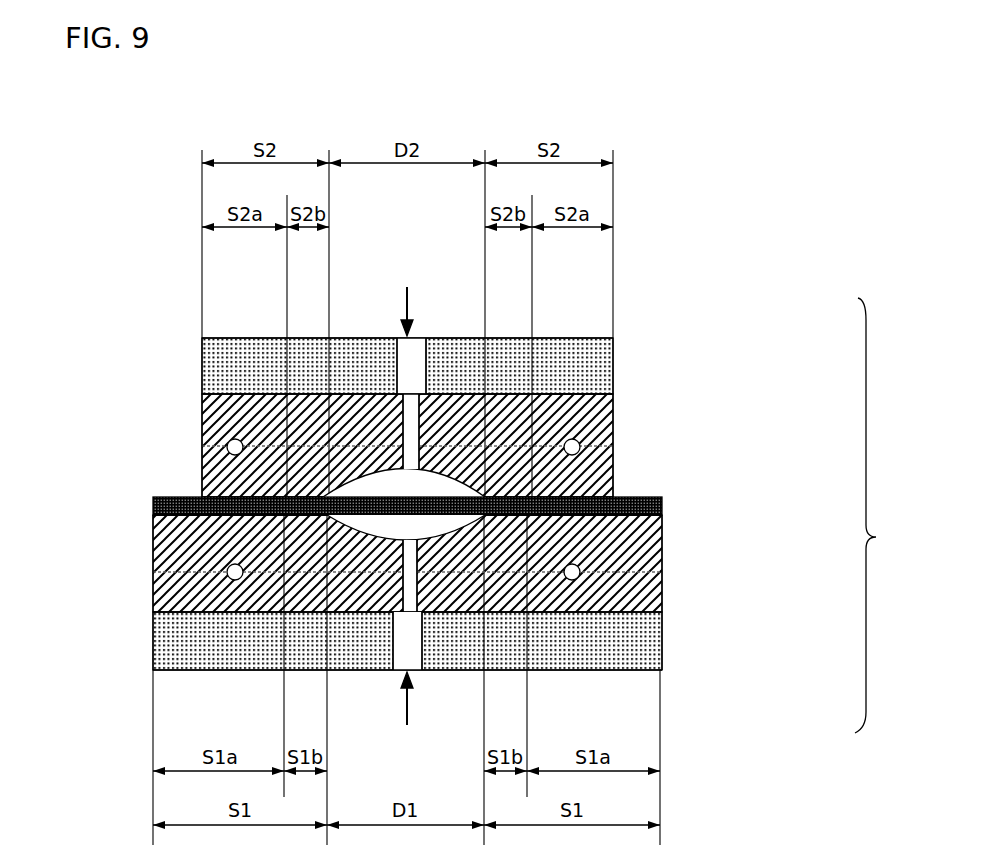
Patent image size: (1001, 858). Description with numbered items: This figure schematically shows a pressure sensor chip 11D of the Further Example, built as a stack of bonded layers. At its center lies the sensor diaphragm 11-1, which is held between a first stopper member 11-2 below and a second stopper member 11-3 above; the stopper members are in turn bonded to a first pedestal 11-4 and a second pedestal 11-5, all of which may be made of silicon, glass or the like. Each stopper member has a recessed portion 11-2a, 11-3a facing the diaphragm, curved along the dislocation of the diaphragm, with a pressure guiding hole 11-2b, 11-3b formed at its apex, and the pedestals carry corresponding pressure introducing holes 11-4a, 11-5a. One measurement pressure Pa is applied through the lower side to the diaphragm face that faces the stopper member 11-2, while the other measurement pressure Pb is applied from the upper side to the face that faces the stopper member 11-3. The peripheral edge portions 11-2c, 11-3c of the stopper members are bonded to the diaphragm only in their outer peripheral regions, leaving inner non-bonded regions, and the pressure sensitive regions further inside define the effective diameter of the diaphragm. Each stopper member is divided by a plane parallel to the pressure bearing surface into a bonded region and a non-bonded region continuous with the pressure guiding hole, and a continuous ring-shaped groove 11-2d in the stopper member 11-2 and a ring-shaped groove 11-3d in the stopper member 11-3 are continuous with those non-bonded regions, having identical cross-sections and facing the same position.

The pressure sensor chip 11D is at (891, 515).
The sensor diaphragm 11-1 is at (662, 503).
The first stopper member 11-2 is at (662, 557).
The recessed portion of first stopper member 11-2a is at (485, 525).
The pressure guiding hole of first stopper member 11-2b is at (407, 595).
The peripheral edge portion of first stopper member 11-2c is at (250, 518).
The ring-shaped groove of first stopper member 11-2d is at (235, 580).
The second stopper member 11-3 is at (613, 412).
The recessed portion of second stopper member 11-3a is at (478, 413).
The pressure guiding hole of second stopper member 11-3b is at (410, 452).
The peripheral edge portion of second stopper member 11-3c is at (250, 492).
The ring-shaped groove of second stopper member 11-3d is at (232, 440).
The first pedestal 11-4 is at (662, 650).
The pressure introducing hole of first pedestal 11-4a is at (400, 650).
The second pedestal 11-5 is at (613, 354).
The pressure introducing hole of second pedestal 11-5a is at (404, 357).
The one measurement pressure Pa is at (409, 715).
The other measurement pressure Pb is at (409, 298).